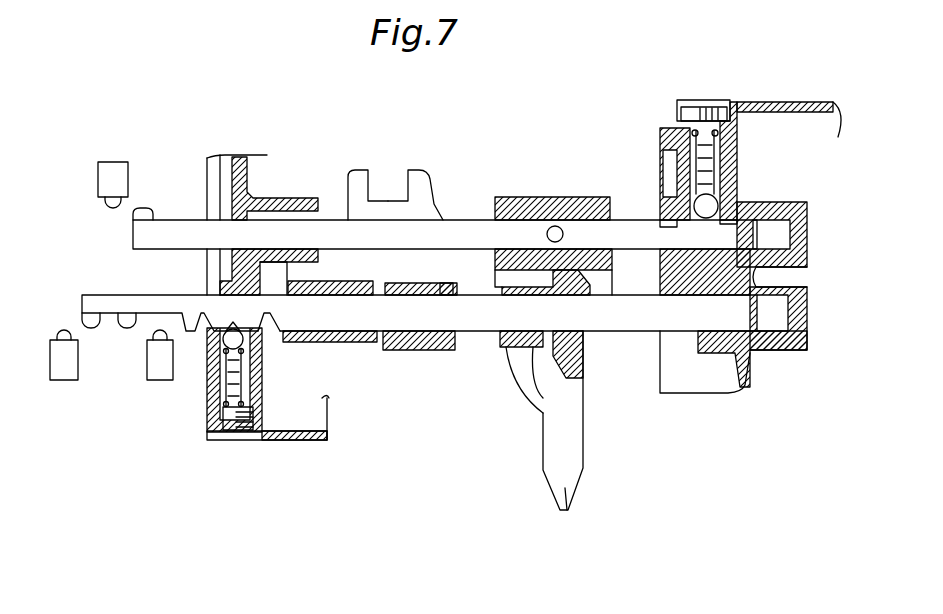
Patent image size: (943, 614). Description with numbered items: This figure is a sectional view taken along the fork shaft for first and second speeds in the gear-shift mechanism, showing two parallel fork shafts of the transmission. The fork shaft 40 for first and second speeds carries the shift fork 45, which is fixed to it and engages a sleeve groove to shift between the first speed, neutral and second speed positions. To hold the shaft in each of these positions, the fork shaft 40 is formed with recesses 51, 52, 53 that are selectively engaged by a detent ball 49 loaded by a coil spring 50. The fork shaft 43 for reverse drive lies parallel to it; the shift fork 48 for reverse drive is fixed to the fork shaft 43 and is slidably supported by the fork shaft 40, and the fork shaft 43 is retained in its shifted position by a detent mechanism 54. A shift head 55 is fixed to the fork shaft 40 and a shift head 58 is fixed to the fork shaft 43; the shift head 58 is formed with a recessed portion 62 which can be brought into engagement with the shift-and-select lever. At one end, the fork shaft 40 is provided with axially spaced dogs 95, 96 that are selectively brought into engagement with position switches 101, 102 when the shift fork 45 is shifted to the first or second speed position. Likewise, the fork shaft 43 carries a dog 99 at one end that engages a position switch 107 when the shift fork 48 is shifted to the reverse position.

The fork shaft for 1st–2nd speeds 40 is at (628, 322).
The fork shaft for reverse drive 43 is at (466, 228).
The shift fork for 1st–2nd speeds 45 is at (356, 342).
The shift fork for reverse drive 48 is at (568, 512).
The detent ball 49 is at (228, 330).
The coil spring 50 is at (233, 437).
The recess 51 is at (204, 318).
The recess 52 is at (250, 370).
The recess 53 is at (266, 322).
The detent mechanism 54 is at (716, 193).
The shift head 55 is at (437, 348).
The shift head 58 is at (357, 180).
The recessed portion 62 is at (389, 196).
The dog 95 is at (127, 330).
The dog 96 is at (92, 330).
The dog 99 is at (147, 213).
The position switch 101 is at (164, 380).
The position switch 102 is at (64, 380).
The position switch 107 is at (120, 173).